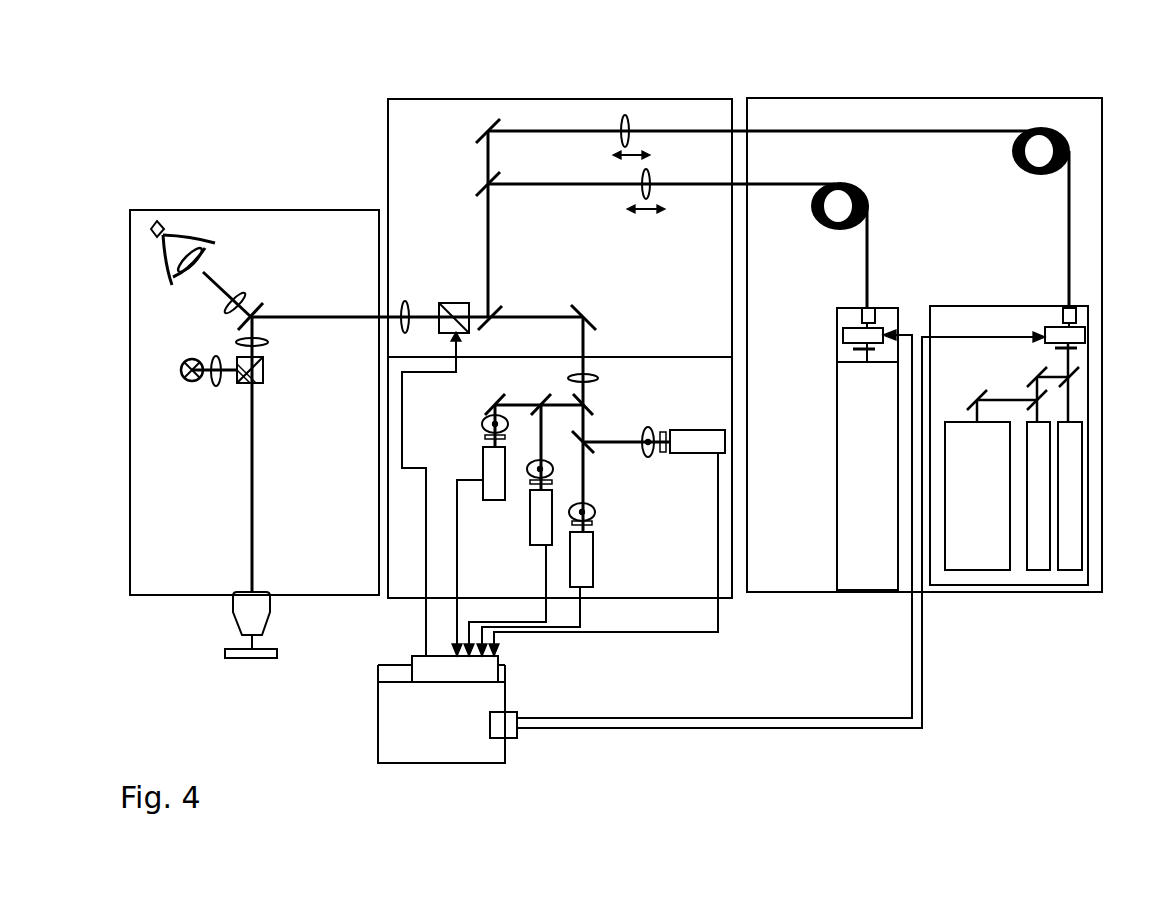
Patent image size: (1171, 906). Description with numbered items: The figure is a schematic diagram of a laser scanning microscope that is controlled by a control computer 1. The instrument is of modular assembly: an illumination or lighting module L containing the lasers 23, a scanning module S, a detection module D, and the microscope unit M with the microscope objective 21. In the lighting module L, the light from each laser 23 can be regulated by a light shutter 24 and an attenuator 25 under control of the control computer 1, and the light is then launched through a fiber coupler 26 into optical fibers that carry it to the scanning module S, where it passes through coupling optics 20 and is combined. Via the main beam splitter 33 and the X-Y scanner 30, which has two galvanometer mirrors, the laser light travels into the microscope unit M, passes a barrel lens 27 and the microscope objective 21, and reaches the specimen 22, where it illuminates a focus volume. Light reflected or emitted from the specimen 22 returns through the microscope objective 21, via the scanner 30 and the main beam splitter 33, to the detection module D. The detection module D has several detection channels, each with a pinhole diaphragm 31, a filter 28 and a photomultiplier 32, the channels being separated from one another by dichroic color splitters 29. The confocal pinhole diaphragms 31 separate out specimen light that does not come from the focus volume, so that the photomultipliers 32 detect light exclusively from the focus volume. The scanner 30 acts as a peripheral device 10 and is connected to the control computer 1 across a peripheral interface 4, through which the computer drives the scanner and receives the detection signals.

The control computer 1 is at (453, 731).
The peripheral interface 4 is at (455, 669).
The peripheral device 10 is at (455, 303).
The collimation optics 20 is at (648, 170).
The microscope objective 21 is at (233, 612).
The specimen 22 is at (237, 660).
The laser 23 is at (1073, 434).
The light shutter 24 is at (853, 349).
The attenuator 25 is at (843, 335).
The fiber coupler 26 is at (862, 312).
The barrel lens 27 is at (237, 342).
The filter 28 is at (530, 481).
The dichroic beam splitter 29 is at (547, 393).
The X-Y scanner 30 is at (463, 288).
The pin diaphragm 31 is at (538, 461).
The photomultiplier 32 is at (495, 500).
The main beam splitter 33 is at (497, 310).
The scanning module S is at (465, 99).
The lighting module L is at (815, 97).
The microscope M is at (247, 210).
The detection module D is at (388, 598).